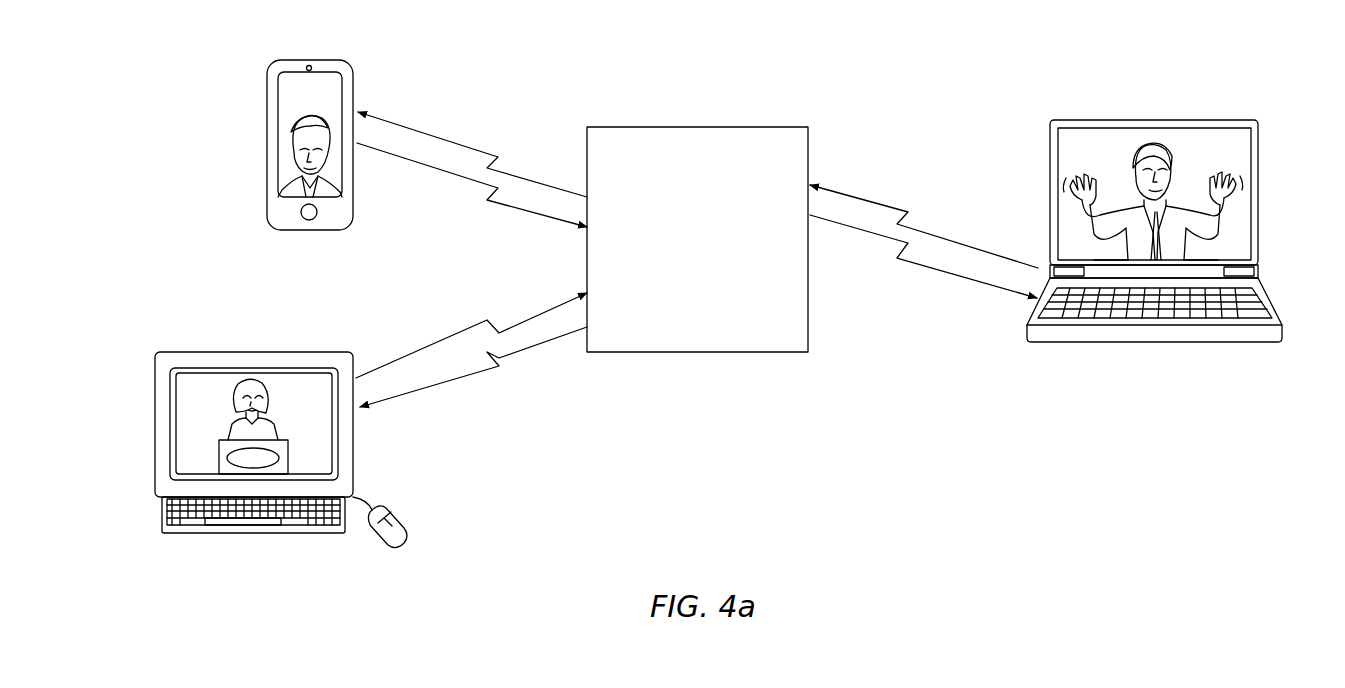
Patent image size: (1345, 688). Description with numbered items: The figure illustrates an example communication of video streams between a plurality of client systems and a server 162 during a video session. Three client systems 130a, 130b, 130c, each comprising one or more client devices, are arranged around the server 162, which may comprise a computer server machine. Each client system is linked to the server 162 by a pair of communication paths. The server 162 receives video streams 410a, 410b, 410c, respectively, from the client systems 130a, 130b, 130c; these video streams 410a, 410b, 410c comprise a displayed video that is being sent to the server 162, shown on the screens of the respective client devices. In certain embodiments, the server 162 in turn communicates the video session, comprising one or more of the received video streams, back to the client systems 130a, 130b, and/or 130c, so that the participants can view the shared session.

The client system 130a is at (348, 66).
The video stream 410a is at (296, 118).
The server 162 is at (763, 127).
The client system 130b is at (232, 352).
The video stream 410b is at (237, 397).
The client system 130c is at (1222, 120).
The video stream 410c is at (1218, 241).